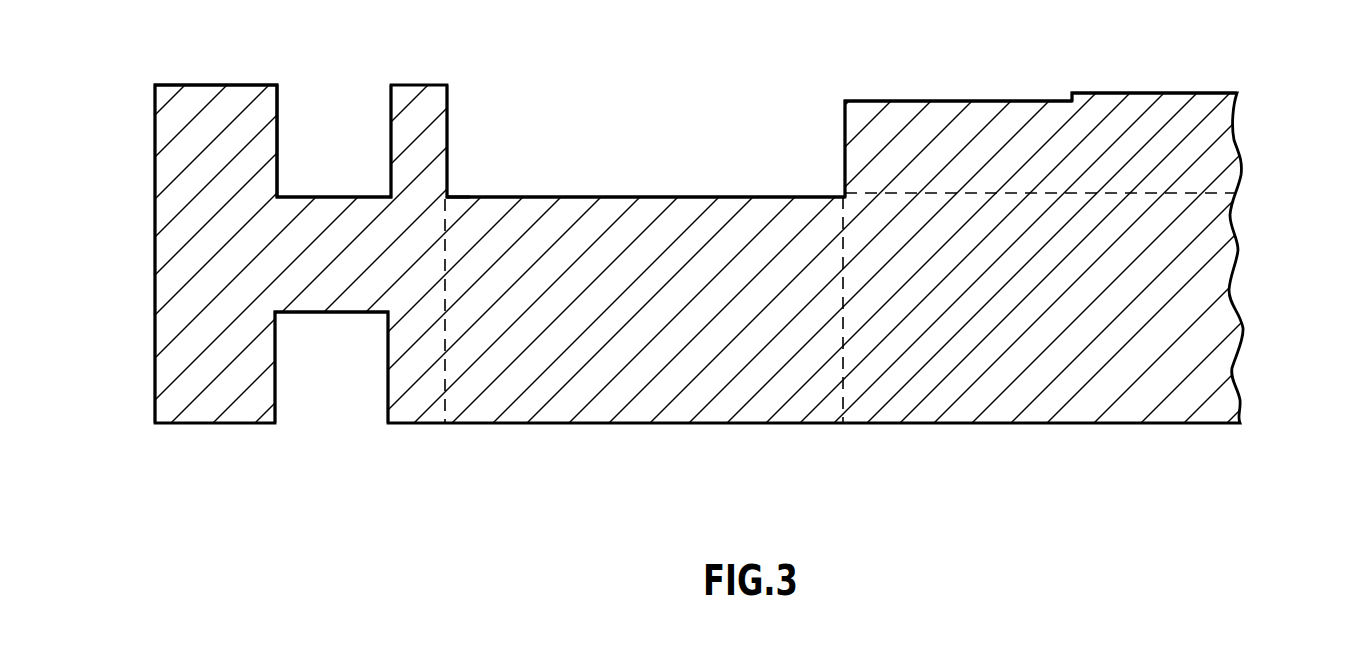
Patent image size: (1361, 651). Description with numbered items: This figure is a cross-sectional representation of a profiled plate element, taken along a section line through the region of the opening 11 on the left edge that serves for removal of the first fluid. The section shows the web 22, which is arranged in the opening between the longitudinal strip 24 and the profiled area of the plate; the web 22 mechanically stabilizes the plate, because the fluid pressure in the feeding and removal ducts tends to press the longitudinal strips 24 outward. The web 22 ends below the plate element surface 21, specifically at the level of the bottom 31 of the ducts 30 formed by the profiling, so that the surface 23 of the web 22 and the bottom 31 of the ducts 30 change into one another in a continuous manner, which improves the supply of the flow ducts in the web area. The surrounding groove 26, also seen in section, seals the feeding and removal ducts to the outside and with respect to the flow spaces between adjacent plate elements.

The opening for removal of the first fluid 11 is at (693, 385).
The plate element surface 21 is at (871, 100).
The web 22 is at (640, 197).
The surface of the web 23 is at (477, 197).
The longitudinal strip 24 is at (213, 123).
The surrounding groove 26 is at (334, 142).
The flow duct 30 is at (1060, 138).
The bottom of the ducts 31 is at (1170, 193).